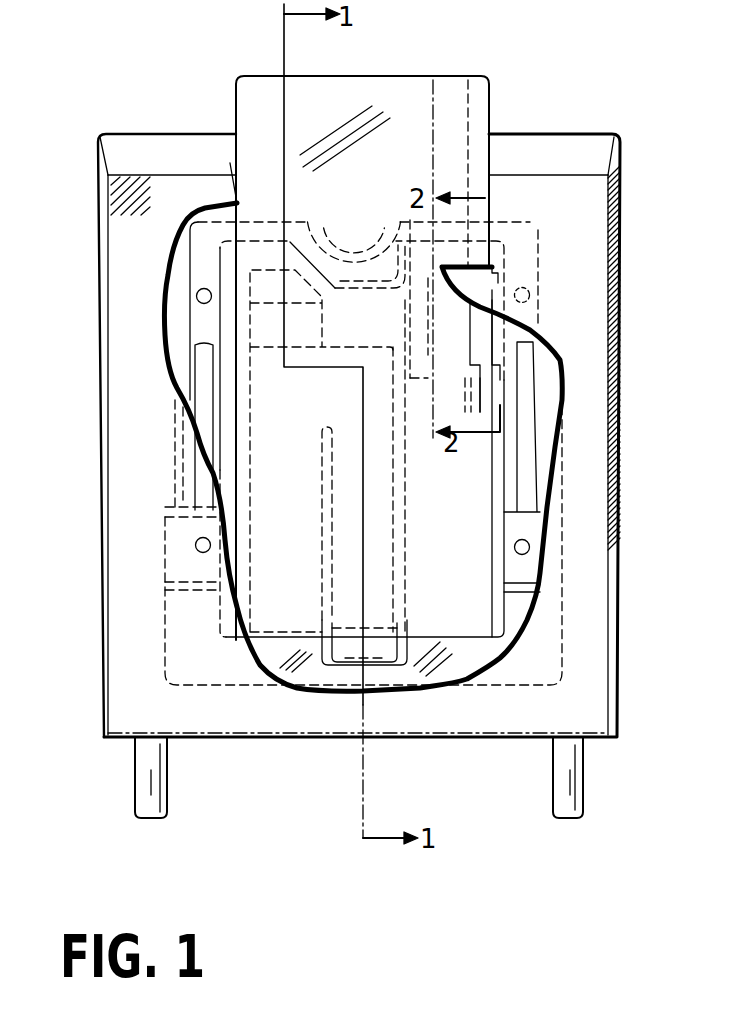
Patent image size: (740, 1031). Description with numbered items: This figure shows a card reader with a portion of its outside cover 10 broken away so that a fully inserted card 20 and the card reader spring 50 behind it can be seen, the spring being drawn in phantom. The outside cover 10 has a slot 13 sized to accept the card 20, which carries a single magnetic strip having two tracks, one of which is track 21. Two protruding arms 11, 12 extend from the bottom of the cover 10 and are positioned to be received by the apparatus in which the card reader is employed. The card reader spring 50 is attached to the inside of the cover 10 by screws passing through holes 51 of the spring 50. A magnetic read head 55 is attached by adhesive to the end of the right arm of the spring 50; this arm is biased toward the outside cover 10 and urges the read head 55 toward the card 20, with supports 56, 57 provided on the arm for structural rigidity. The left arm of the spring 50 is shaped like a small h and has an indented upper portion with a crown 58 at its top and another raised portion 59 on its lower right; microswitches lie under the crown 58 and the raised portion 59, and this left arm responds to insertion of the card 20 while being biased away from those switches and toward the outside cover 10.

The outside cover 10 is at (590, 134).
The protruding arm 11 is at (575, 819).
The protruding arm 12 is at (153, 819).
The slot 13 is at (495, 263).
The card 20 is at (489, 78).
The track 21 is at (445, 90).
The card reader spring 50 is at (558, 373).
The holes 51 is at (196, 296).
The magnetic read head 55 is at (496, 328).
The support 56 is at (470, 413).
The support 57 is at (440, 433).
The crown 58 is at (270, 323).
The raised portion 59 is at (353, 637).